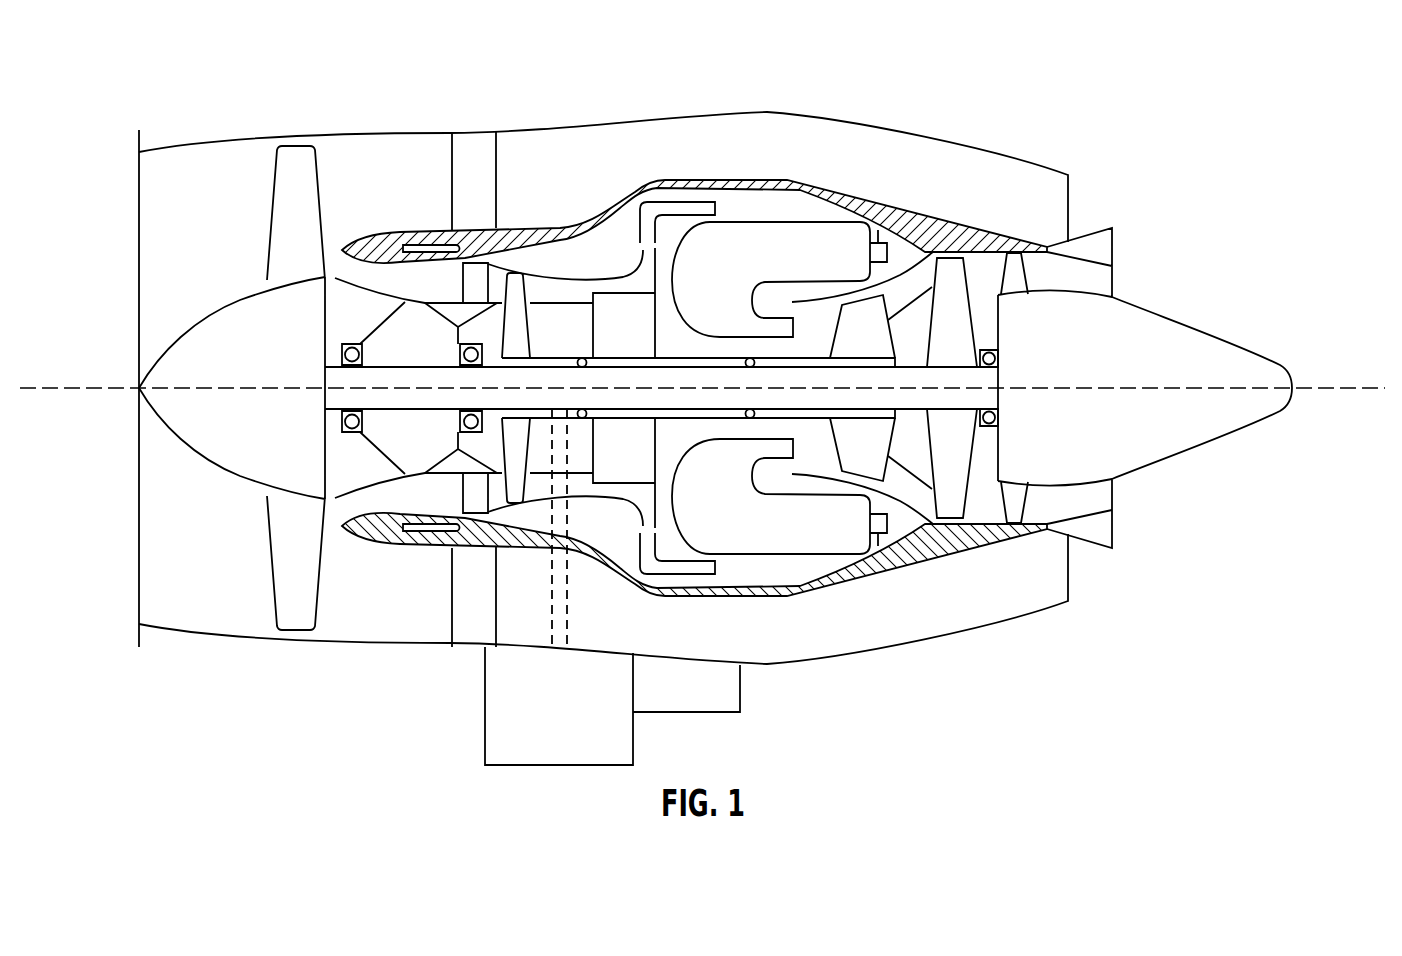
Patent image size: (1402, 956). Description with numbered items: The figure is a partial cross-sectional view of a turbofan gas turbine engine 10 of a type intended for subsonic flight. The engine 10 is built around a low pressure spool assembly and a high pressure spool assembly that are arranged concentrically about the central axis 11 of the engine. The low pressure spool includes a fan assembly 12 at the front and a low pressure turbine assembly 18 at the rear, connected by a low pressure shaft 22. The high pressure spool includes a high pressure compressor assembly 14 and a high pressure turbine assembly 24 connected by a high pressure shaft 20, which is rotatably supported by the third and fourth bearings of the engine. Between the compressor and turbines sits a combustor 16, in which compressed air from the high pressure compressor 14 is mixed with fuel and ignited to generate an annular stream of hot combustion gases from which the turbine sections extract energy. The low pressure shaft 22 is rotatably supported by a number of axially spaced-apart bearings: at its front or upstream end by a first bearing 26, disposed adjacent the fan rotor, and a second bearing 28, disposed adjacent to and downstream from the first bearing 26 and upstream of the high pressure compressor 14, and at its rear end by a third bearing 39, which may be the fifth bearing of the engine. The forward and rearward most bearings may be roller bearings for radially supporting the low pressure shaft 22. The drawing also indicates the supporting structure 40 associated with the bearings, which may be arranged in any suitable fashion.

The turbofan gas turbine engine 10 is at (1018, 90).
The central axis 11 is at (1350, 382).
The fan assembly 12 is at (285, 552).
The high pressure compressor assembly 14 is at (622, 312).
The combustor 16 is at (820, 243).
The low pressure turbine assembly 18 is at (952, 463).
The high pressure shaft 20 is at (557, 357).
The low pressure shaft 22 is at (418, 411).
The high pressure turbine assembly 24 is at (862, 452).
The first bearing 26 is at (343, 338).
The second bearing 28 is at (471, 446).
The third bearing 39 is at (987, 348).
The bearing support structure 40 is at (459, 318).